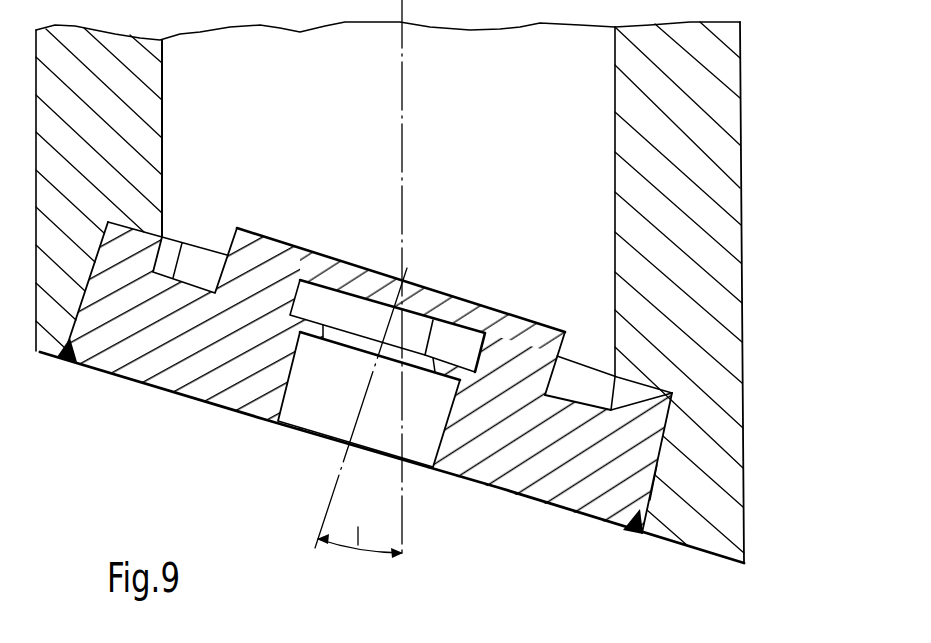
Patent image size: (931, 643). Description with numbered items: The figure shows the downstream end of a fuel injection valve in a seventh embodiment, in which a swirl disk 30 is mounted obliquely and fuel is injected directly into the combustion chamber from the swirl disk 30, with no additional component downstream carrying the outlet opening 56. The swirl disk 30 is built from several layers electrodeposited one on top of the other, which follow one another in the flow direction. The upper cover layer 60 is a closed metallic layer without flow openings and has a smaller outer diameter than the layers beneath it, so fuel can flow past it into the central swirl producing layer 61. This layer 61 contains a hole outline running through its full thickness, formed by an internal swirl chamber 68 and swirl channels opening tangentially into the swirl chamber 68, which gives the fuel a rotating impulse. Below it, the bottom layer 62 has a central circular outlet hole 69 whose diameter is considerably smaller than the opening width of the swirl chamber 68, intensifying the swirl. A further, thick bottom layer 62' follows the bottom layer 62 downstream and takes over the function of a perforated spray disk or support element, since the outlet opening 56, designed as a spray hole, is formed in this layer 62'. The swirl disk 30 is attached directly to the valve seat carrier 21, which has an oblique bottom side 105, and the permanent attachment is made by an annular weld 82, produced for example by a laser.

The valve seat carrier 21 is at (717, 107).
The swirl disk 30 is at (198, 383).
The outlet opening 56 is at (420, 452).
The cover layer 60 is at (565, 332).
The swirl producing layer 61 is at (672, 393).
The bottom layer 62 is at (723, 463).
The bottom layer 62' is at (717, 493).
The swirl chamber 68 is at (325, 298).
The outlet hole 69 is at (348, 343).
The weld 82 is at (640, 505).
The oblique bottom side 105 is at (692, 555).